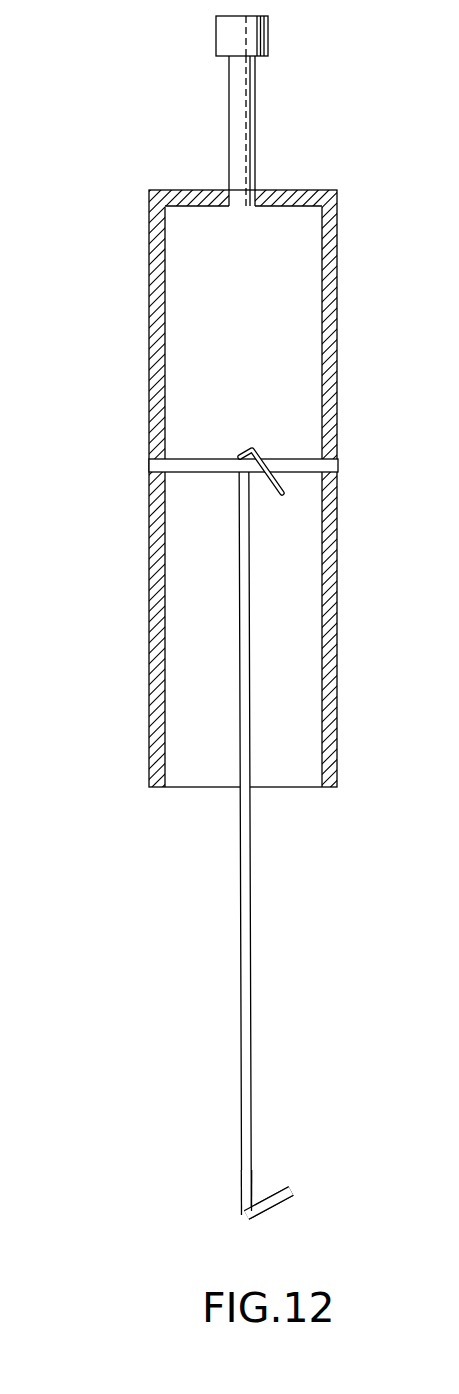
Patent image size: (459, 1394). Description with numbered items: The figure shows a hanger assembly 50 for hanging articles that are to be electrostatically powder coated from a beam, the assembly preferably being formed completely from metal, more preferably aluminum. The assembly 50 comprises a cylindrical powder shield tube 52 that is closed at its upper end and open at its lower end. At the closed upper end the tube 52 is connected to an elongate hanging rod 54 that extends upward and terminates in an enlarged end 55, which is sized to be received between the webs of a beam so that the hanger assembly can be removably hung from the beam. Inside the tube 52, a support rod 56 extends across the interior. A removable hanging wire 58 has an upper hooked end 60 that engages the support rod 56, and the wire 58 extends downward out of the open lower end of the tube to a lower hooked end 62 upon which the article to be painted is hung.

The hanger assembly 50 is at (106, 203).
The cylindrical powder shield tube 52 is at (148, 305).
The elongate hanging rod 54 is at (256, 140).
The enlarged end 55 is at (268, 43).
The support rod 56 is at (302, 458).
The removable hanging wire 58 is at (251, 942).
The upper hooked end 60 is at (248, 450).
The lower hooked end 62 is at (286, 1203).